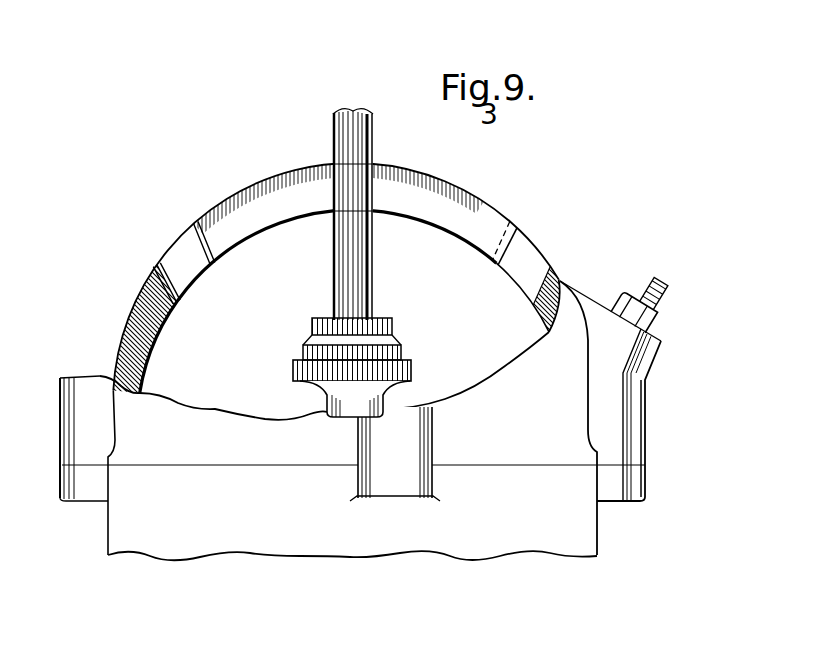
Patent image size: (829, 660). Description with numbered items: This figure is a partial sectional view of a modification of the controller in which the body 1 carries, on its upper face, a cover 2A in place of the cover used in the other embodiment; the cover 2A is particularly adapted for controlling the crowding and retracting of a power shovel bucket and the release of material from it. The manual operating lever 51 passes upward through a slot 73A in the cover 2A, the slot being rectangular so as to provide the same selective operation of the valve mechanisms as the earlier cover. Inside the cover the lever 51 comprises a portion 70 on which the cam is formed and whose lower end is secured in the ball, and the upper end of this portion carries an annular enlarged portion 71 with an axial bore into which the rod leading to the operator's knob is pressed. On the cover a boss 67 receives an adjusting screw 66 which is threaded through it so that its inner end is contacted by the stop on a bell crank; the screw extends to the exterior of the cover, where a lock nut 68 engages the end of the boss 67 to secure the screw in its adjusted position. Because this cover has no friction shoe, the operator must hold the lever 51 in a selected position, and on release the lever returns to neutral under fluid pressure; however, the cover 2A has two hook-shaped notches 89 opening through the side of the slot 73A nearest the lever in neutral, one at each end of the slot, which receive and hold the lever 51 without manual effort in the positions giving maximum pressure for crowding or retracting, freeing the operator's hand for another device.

The body 1 is at (143, 550).
The cover 2A is at (273, 178).
The manual operating lever 51 is at (357, 137).
The adjusting screw 66 is at (655, 288).
The boss 67 is at (418, 450).
The lock nut 68 is at (650, 325).
The portion of the lever 70 is at (378, 406).
The annular enlarged portion 71 is at (306, 370).
The slot 73A is at (478, 206).
The notches 89 is at (192, 222).